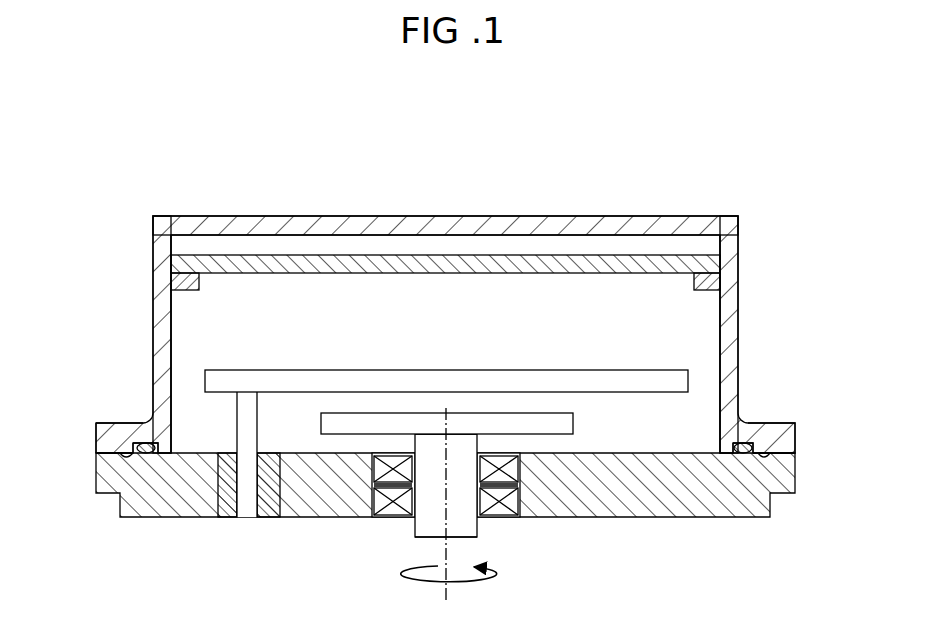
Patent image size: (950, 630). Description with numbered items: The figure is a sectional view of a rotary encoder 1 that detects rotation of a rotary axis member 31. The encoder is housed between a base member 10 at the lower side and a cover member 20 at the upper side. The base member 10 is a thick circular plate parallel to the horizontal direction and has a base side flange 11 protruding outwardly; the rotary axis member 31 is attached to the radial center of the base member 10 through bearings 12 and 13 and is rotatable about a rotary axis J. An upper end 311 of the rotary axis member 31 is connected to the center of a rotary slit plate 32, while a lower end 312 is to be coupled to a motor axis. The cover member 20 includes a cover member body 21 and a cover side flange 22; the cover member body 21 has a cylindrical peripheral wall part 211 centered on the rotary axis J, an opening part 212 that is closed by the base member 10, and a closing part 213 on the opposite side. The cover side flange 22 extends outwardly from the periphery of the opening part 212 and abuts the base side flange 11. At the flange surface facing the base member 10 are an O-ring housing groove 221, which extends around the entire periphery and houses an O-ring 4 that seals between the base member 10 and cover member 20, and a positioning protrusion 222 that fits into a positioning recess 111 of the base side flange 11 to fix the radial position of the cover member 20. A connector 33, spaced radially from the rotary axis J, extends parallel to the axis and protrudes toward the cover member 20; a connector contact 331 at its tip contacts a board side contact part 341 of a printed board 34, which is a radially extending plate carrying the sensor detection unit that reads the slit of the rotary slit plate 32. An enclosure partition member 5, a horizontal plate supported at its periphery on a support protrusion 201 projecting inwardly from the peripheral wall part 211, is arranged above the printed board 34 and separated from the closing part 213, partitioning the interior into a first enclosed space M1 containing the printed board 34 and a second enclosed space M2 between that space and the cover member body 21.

The rotary encoder 1 is at (764, 156).
The base member 10 is at (750, 533).
The base side flange 11 is at (103, 477).
The positioning recess 111 is at (123, 458).
The bearing 12 is at (372, 468).
The bearing 13 is at (372, 497).
The cover member 20 is at (80, 350).
The cover member body 21 is at (160, 350).
The cover side flange 22 is at (127, 421).
The support protrusion 201 is at (176, 289).
The peripheral wall part 211 is at (168, 352).
The opening part 212 is at (720, 453).
The closing part 213 is at (468, 217).
The O-ring housing groove 221 is at (142, 452).
The positioning protrusion 222 is at (128, 457).
The O-ring 4 is at (151, 451).
The enclosure partition member 5 is at (265, 246).
The rotary axis member 31 is at (415, 525).
The upper end 311 is at (462, 433).
The lower end 312 is at (425, 538).
The rotary slit plate 32 is at (573, 433).
The connector 33 is at (240, 495).
The connector contact 331 is at (267, 393).
The printed board 34 is at (637, 392).
The board side contact part 341 is at (253, 382).
The first enclosed space M1 is at (605, 305).
The second enclosed space M2 is at (563, 243).
The rotary axis J is at (447, 590).